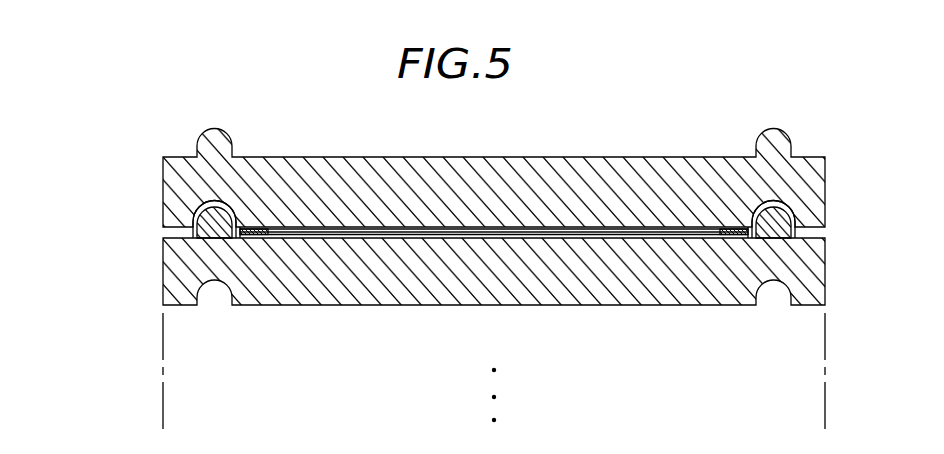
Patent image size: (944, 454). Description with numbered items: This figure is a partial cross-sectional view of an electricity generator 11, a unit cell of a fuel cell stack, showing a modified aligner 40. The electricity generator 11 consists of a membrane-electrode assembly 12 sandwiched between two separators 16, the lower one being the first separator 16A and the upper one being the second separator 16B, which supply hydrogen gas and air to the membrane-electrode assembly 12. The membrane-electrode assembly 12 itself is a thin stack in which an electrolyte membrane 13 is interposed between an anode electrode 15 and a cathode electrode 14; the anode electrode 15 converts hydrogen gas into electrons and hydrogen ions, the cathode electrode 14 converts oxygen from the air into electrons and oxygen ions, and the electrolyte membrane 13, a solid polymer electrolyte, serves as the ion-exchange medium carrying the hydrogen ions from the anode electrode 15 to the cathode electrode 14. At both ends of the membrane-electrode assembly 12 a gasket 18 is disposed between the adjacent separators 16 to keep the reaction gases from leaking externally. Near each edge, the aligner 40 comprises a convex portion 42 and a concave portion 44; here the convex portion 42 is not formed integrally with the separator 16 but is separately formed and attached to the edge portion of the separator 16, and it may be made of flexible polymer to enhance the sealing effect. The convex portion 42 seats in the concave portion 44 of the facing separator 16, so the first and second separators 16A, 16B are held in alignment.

The electricity generator 11 is at (486, 271).
The membrane-electrode assembly 12 is at (494, 317).
The electrolyte membrane 13 is at (405, 232).
The cathode electrode 14 is at (443, 235).
The anode electrode 15 is at (361, 229).
The separator 16 is at (494, 271).
The first separator 16A is at (642, 277).
The second separator 16B is at (572, 208).
The gasket 18 is at (248, 238).
The aligner 40 is at (425, 213).
The convex portion 42 is at (196, 231).
The concave portion 44 is at (195, 209).